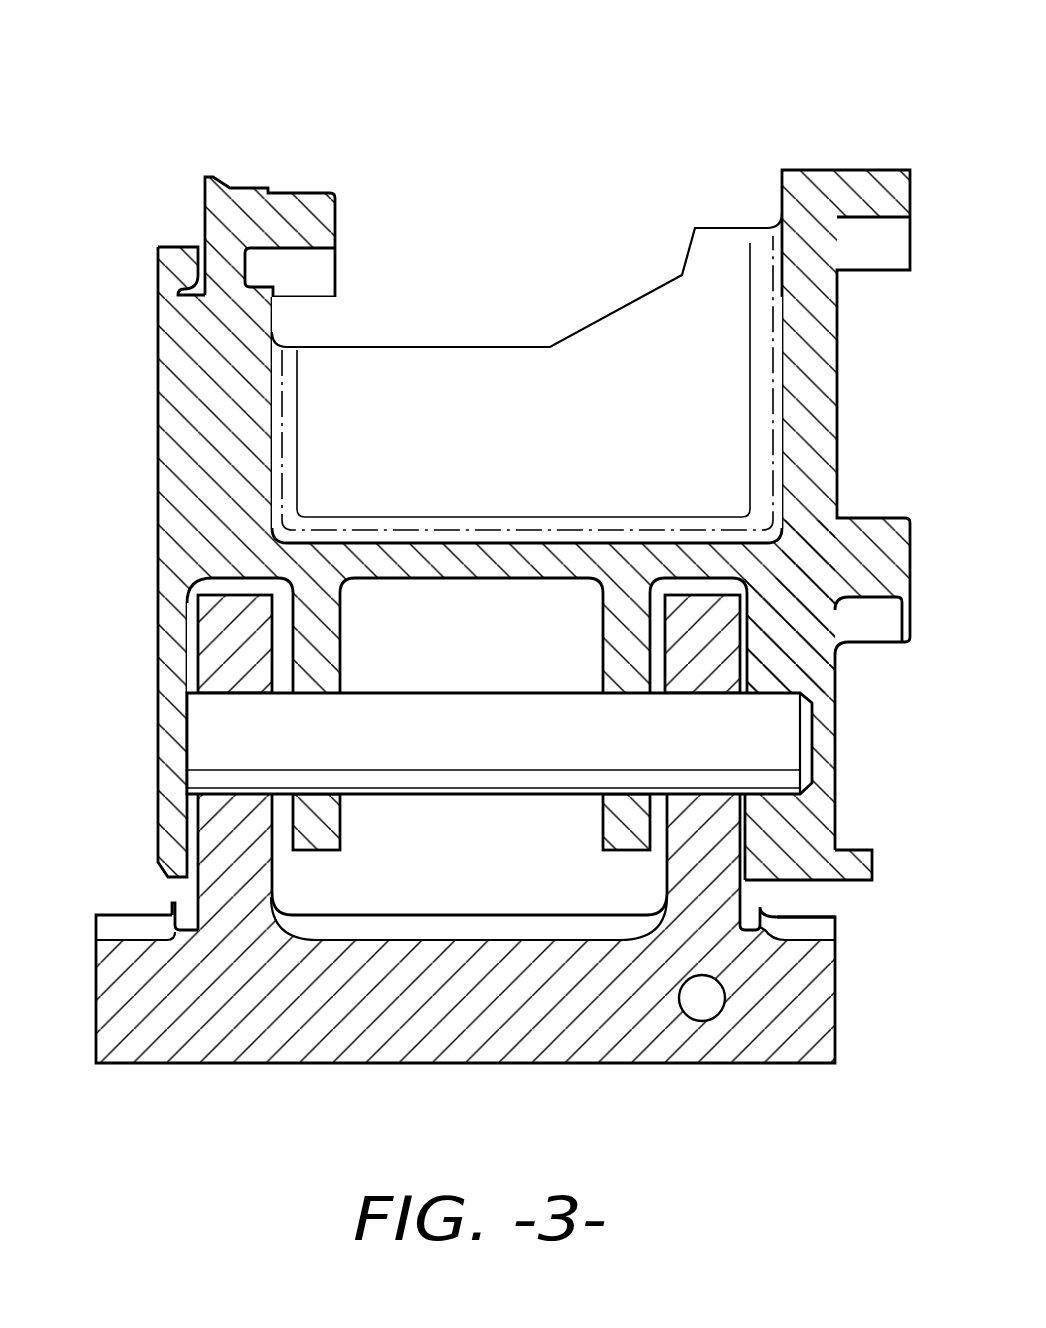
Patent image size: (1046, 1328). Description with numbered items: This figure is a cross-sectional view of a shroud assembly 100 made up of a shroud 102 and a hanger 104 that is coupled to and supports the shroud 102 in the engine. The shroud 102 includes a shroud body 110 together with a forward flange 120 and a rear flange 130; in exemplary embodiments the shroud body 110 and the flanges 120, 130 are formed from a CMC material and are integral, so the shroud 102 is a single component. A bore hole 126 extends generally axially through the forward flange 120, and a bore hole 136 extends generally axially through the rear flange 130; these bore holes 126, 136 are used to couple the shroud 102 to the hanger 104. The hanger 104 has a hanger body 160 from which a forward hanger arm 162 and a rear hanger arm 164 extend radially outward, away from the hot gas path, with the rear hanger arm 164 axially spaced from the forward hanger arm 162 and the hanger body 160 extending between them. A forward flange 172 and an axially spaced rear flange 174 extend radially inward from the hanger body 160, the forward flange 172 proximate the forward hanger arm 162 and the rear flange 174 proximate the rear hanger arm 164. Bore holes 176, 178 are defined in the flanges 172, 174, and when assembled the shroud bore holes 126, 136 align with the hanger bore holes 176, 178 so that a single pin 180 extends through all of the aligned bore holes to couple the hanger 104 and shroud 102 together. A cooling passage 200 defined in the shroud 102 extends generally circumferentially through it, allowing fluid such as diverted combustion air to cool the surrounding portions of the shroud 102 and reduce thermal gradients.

The shroud assembly 100 is at (158, 108).
The shroud 102 is at (213, 1075).
The hanger 104 is at (138, 480).
The shroud body 110 is at (438, 996).
The forward flange 120 is at (225, 878).
The bore hole 126 is at (228, 800).
The rear flange 130 is at (717, 872).
The bore hole 136 is at (712, 800).
The hanger body 160 is at (415, 562).
The forward hanger arm 162 is at (190, 388).
The rear hanger arm 164 is at (805, 388).
The forward flange 172 is at (312, 622).
The rear flange 174 is at (625, 605).
The bore hole 176 is at (347, 800).
The bore hole 178 is at (598, 800).
The pin 180 is at (770, 745).
The cooling passage 200 is at (682, 1020).